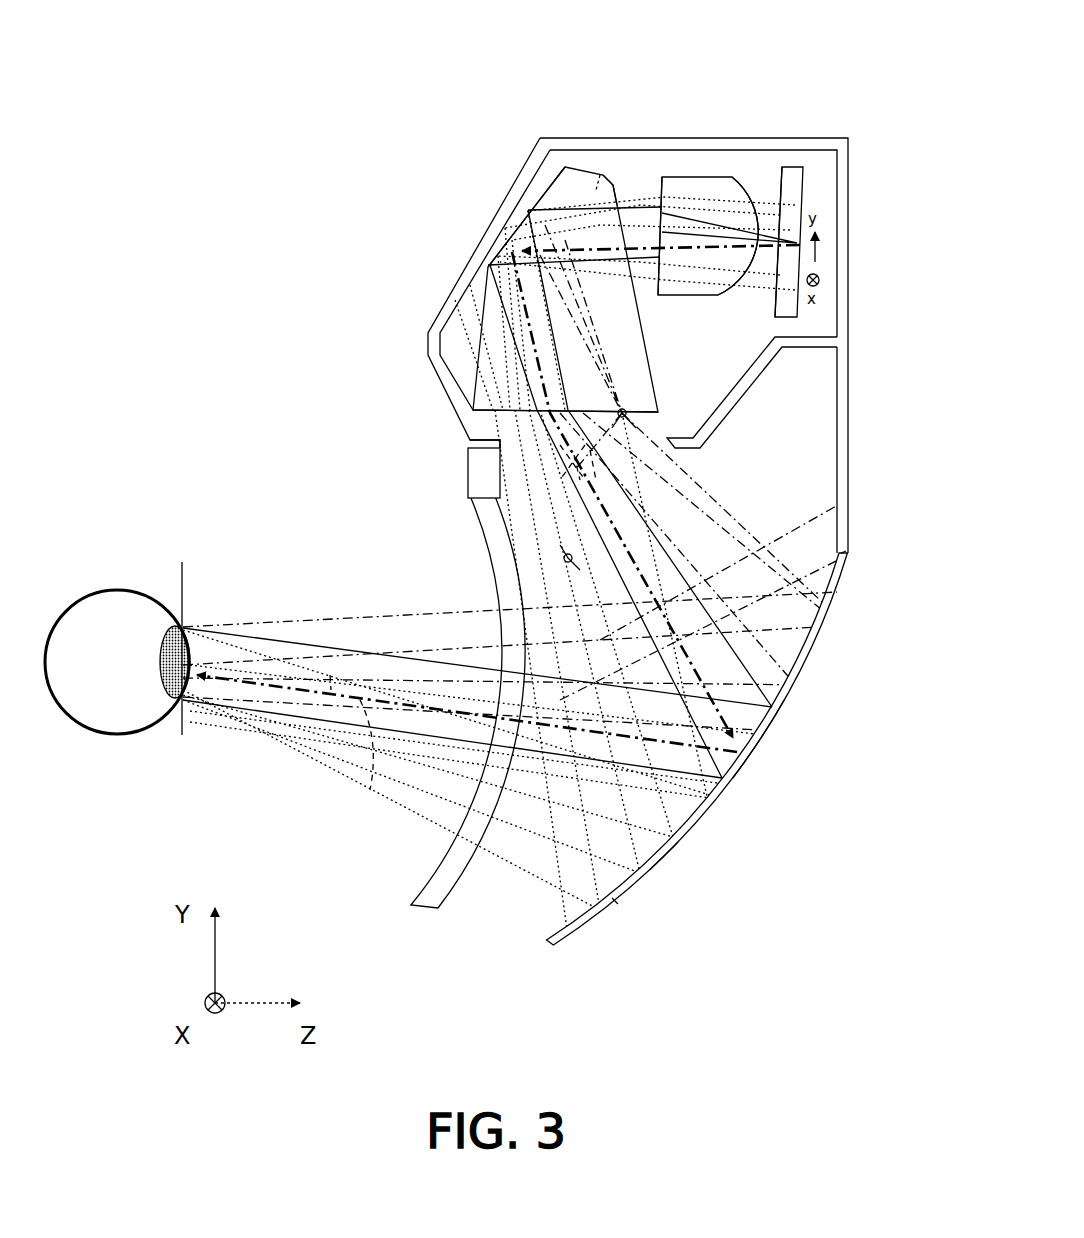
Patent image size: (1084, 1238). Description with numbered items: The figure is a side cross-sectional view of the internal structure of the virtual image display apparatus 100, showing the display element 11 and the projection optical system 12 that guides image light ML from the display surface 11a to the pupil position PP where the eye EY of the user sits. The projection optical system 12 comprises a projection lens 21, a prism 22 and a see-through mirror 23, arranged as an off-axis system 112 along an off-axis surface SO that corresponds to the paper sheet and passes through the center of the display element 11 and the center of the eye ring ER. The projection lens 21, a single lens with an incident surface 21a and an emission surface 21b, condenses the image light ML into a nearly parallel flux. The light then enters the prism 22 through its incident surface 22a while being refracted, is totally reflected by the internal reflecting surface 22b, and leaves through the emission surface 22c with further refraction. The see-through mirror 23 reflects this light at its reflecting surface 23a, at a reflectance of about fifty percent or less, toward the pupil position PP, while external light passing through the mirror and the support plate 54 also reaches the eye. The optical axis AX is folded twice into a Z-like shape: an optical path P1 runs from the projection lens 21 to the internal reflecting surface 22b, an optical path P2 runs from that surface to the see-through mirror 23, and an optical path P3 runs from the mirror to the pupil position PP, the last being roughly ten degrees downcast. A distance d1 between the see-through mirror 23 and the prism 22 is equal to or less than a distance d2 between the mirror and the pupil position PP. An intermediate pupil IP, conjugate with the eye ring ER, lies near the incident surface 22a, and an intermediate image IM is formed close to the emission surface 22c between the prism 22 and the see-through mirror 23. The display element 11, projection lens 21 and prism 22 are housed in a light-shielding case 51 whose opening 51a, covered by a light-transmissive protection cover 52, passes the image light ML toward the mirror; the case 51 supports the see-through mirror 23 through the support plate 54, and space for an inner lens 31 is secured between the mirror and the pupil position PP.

The virtual image display apparatus 100 is at (448, 130).
The projection optical system 12 is at (434, 262).
The off-axis system 112 is at (424, 290).
The display element 11 is at (796, 170).
The display surface 11a is at (790, 200).
The projection lens 21 is at (706, 176).
The incident surface 21a is at (760, 242).
The emission surface 21b is at (662, 200).
The prism 22 is at (578, 170).
The incident surface 22a is at (650, 270).
The internal reflecting surface 22b is at (520, 218).
The emission surface 22c is at (490, 412).
The see-through mirror 23 is at (788, 698).
The reflecting surface 23a is at (667, 845).
The inner lens 31 is at (424, 910).
The case 51 is at (850, 215).
The opening 51a is at (485, 452).
The protection cover 52 is at (500, 466).
The support plate 54 is at (848, 385).
The optical axis AX is at (470, 312).
The image light ML is at (530, 175).
The intermediate pupil IP is at (600, 175).
The optical path P1 is at (623, 362).
The optical path P2 is at (482, 515).
The optical path P3 is at (373, 769).
The intermediate image IM is at (520, 570).
The off-axis surface SO is at (818, 480).
The distance d1 is at (628, 502).
The distance d2 is at (379, 674).
The eye EY is at (118, 736).
The pupil position PP is at (182, 600).
The eye ring ER is at (188, 640).